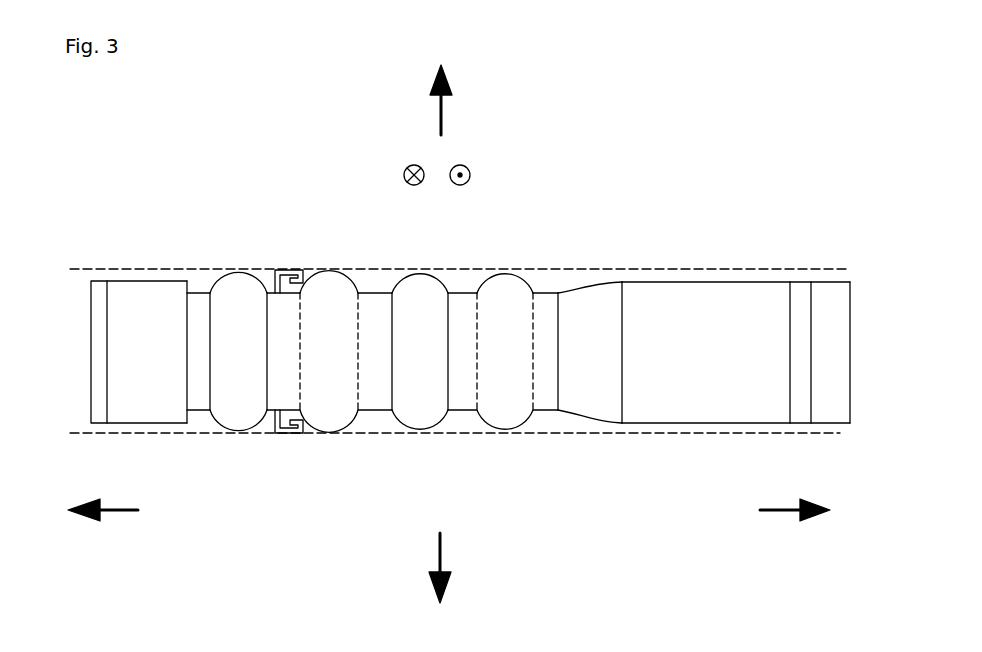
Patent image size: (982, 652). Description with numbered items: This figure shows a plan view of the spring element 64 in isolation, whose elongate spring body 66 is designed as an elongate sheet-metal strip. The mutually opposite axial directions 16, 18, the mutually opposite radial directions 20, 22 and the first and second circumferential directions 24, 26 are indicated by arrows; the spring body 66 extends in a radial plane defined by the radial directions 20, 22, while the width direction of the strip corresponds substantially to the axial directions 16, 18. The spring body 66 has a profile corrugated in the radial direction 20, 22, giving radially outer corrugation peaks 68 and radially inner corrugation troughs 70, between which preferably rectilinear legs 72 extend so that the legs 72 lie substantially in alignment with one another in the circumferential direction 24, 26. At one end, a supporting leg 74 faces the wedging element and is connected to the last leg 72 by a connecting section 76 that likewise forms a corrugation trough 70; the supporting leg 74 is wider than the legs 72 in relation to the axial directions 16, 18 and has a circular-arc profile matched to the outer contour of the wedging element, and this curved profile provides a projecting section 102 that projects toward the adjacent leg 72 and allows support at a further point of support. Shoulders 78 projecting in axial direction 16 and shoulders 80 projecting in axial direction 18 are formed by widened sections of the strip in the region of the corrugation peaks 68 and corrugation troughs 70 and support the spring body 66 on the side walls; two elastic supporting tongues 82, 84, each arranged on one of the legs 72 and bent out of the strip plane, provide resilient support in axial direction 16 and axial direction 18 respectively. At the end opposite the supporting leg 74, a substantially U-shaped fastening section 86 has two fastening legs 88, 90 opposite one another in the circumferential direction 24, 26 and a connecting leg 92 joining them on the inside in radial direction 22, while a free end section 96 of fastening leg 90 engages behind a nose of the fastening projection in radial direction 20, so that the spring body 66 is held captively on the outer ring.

The axial direction 16 is at (445, 553).
The axial direction 18 is at (438, 115).
The radial direction 20 is at (471, 175).
The radial direction 22 is at (403, 175).
The first circumferential direction 24 is at (778, 513).
The second circumferential direction 26 is at (110, 515).
The spring element 64 is at (763, 252).
The spring body 66 is at (622, 272).
The corrugation peaks 68 is at (242, 323).
The corrugation troughs 70 is at (337, 387).
The legs 72 is at (208, 312).
The supporting leg 74 is at (133, 270).
The connecting section 76 is at (200, 400).
The shoulders 78 is at (240, 417).
The shoulders 80 is at (240, 277).
The supporting tongue 82 is at (282, 432).
The supporting tongue 84 is at (284, 270).
The fastening section 86 is at (670, 436).
The fastening leg 88 is at (623, 365).
The fastening leg 90 is at (850, 365).
The connecting leg 92 is at (713, 395).
The free end section 96 is at (823, 322).
The projecting section 102 is at (176, 347).